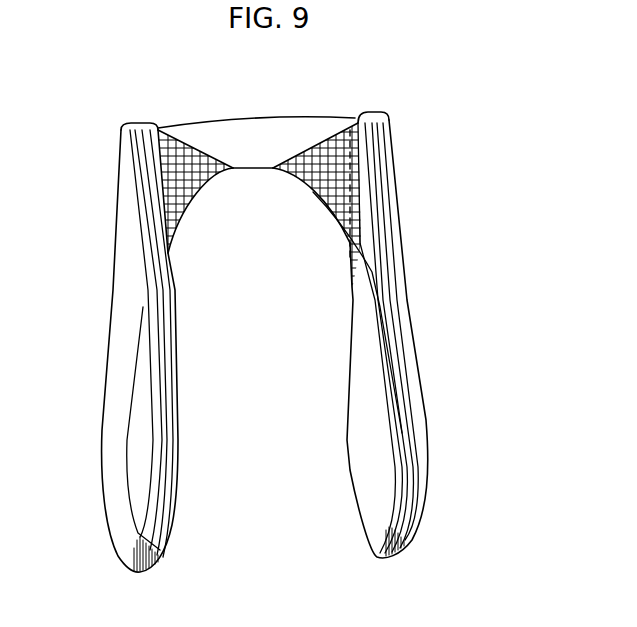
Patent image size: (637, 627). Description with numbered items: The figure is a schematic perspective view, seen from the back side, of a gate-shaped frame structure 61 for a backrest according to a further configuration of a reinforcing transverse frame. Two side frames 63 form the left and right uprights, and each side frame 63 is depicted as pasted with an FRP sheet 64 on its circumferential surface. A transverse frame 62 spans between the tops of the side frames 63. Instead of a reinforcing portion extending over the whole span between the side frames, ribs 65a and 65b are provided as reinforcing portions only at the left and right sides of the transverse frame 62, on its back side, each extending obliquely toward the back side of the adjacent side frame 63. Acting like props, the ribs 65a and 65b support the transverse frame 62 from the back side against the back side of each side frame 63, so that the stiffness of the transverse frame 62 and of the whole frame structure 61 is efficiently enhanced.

The frame structure 61 is at (430, 119).
The transverse frame 62 is at (263, 138).
The side frame 63 is at (111, 461).
The FRP sheet 64 is at (403, 363).
The rib 65a is at (183, 187).
The rib 65b is at (330, 185).